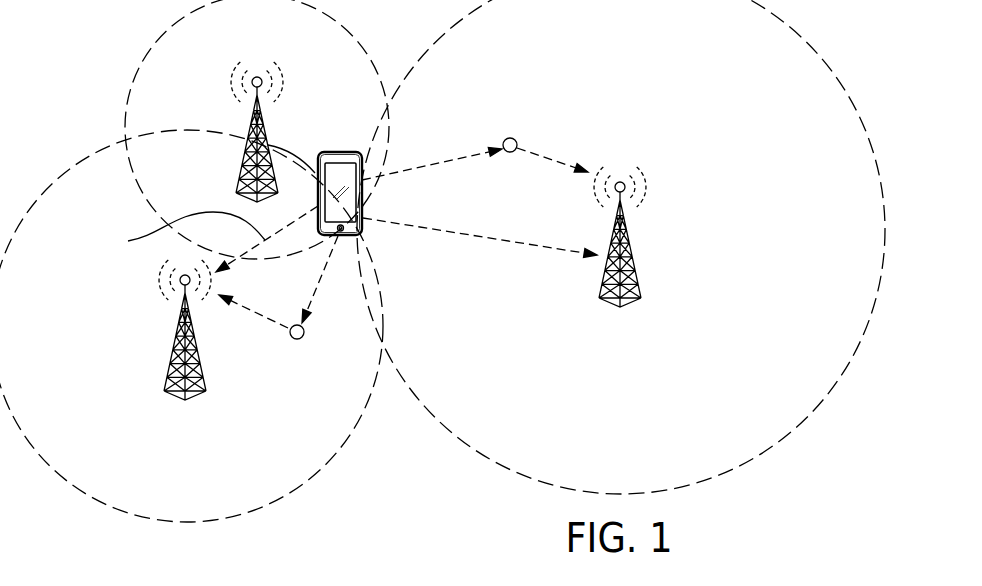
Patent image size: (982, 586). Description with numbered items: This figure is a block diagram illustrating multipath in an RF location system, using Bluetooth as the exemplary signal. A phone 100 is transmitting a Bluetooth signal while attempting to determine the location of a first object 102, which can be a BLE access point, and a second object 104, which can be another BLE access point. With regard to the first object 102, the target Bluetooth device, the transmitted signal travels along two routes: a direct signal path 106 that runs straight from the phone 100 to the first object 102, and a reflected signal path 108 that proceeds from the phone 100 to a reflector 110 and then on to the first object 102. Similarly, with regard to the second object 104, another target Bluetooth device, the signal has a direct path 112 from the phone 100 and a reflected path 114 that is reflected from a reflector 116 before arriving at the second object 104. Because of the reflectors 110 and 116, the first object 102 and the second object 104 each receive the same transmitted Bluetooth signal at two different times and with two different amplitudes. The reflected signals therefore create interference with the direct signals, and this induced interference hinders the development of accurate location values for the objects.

The phone 100 is at (340, 152).
The first object 102 is at (170, 356).
The second object 104 is at (637, 263).
The direct signal path 106 is at (193, 270).
The reflected signal path 108 is at (324, 281).
The reflector 110 is at (296, 339).
The direct path 112 is at (500, 243).
The reflected path 114 is at (457, 158).
The reflector 116 is at (513, 138).